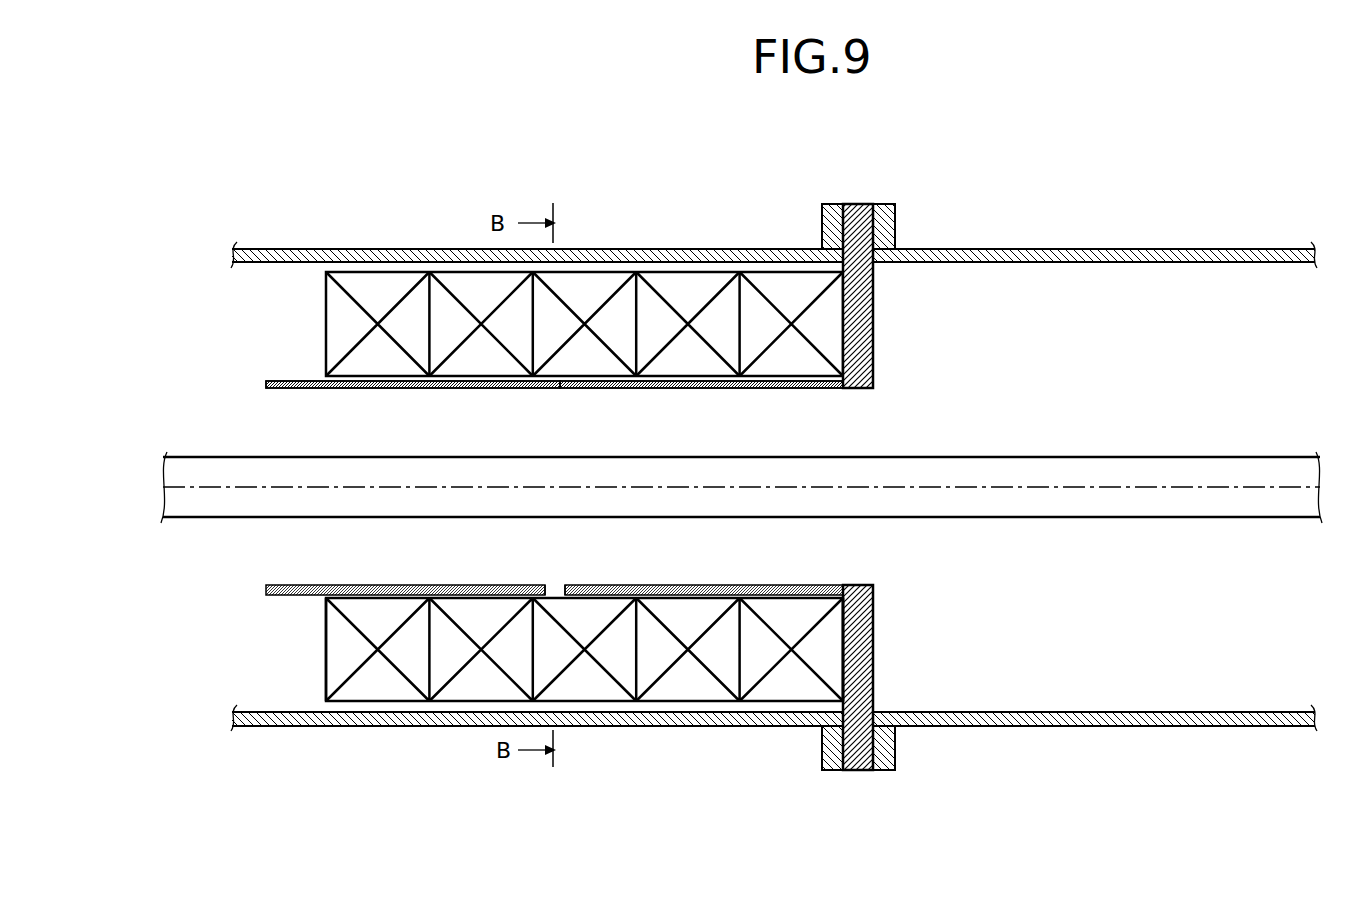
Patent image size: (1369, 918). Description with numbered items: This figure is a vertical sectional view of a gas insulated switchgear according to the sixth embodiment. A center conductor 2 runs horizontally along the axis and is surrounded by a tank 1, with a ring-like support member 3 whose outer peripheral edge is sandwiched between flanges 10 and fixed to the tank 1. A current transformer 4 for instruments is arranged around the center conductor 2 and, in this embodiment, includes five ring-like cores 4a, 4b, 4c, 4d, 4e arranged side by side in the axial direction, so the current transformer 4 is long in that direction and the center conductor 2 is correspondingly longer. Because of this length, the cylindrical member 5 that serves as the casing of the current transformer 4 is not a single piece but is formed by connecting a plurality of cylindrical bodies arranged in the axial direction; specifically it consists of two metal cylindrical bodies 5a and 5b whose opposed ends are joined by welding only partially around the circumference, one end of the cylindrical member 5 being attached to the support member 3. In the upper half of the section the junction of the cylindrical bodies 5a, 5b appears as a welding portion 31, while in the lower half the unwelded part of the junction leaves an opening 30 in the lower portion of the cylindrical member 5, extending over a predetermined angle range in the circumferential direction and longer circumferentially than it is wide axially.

The tank 1 is at (727, 249).
The center conductor 2 is at (1002, 457).
The support member 3 is at (858, 208).
The current transformer for instruments 4 is at (584, 733).
The ring-like core 4a is at (385, 687).
The ring-like core 4b is at (471, 687).
The ring-like core 4c is at (577, 687).
The ring-like core 4d is at (687, 687).
The ring-like core 4e is at (791, 704).
The cylindrical member 5 is at (299, 389).
The cylindrical body 5a is at (428, 389).
The cylindrical body 5b is at (708, 389).
The flange 10 is at (835, 210).
The opening 30 is at (553, 583).
The welding portion 31 is at (566, 389).